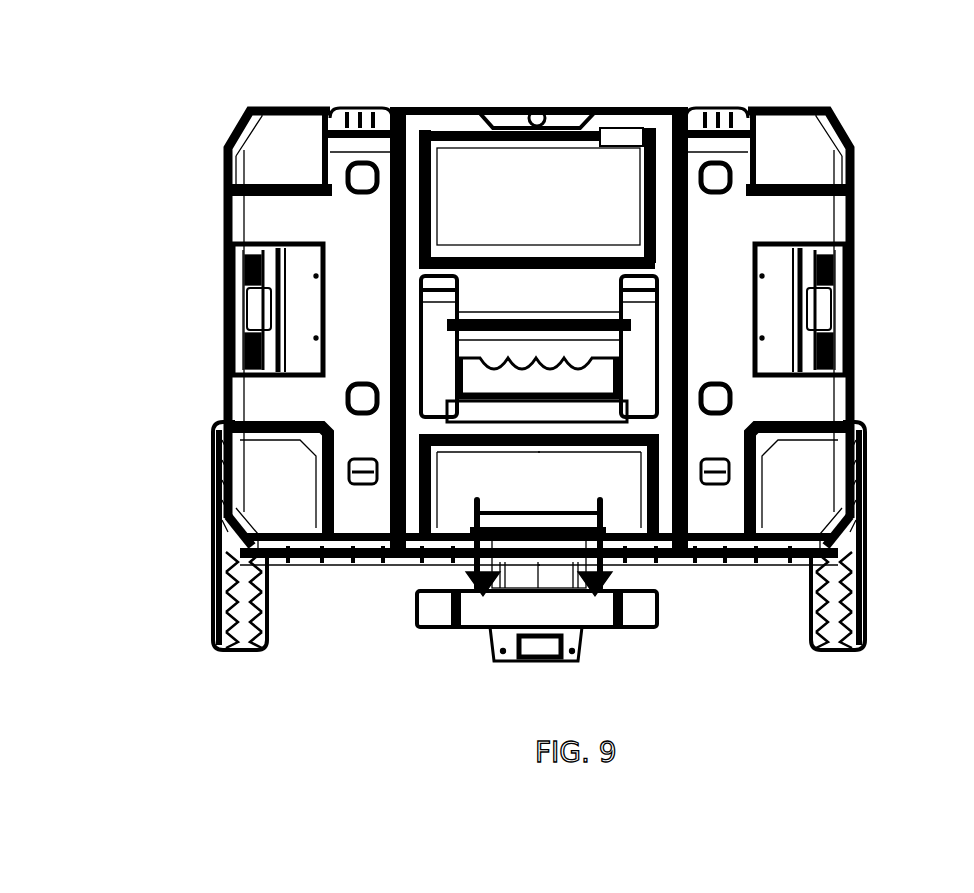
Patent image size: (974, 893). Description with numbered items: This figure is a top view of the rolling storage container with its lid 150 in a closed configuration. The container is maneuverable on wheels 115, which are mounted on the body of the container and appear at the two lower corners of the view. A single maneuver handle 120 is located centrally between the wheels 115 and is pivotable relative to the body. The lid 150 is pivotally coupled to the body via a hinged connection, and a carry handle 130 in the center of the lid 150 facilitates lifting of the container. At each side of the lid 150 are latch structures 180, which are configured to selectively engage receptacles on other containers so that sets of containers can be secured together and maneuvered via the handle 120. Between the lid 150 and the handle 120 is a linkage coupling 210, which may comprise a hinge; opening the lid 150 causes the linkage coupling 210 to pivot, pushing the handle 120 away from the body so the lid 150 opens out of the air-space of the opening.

The wheels 115 is at (213, 590).
The handle 120 is at (575, 615).
The carry handle 130 is at (571, 388).
The lid 150 is at (540, 195).
The latch structures 180 is at (247, 338).
The linkage coupling 210 is at (517, 572).